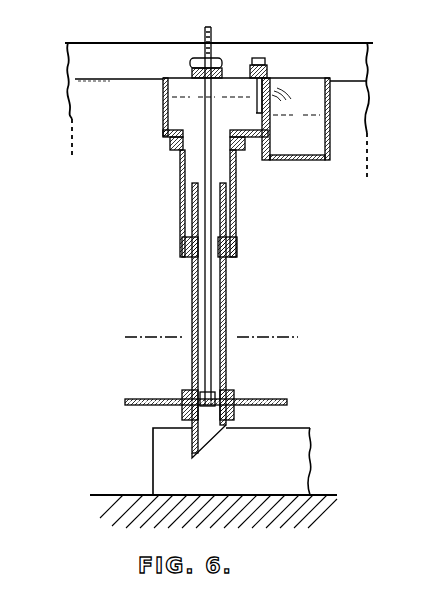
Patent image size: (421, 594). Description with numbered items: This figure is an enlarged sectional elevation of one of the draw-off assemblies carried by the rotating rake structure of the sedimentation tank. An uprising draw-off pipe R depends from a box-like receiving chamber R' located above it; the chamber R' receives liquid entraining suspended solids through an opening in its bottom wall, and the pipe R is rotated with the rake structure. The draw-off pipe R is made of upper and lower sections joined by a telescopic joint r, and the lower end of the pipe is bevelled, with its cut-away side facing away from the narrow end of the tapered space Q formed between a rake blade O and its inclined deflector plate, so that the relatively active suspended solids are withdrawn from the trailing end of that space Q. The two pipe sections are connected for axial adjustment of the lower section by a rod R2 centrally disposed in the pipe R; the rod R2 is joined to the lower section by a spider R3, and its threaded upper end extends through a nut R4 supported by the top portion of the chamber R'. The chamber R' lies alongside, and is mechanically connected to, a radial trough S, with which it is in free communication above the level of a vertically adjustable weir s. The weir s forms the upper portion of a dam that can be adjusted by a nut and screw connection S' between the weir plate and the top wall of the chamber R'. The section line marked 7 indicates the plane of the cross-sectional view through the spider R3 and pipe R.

The box-like chamber R' is at (217, 119).
The nut R4 is at (196, 72).
The rod R2 is at (205, 268).
The draw-off pipe R is at (193, 304).
The telescopic joint r is at (228, 256).
The spider R3 is at (207, 400).
The radial trough S is at (301, 134).
The nut and screw connection S' is at (272, 84).
The vertically adjustable weir s is at (258, 118).
The section line 7- 7 is at (287, 337).
The tapered space Q is at (232, 461).
The blade O is at (295, 428).